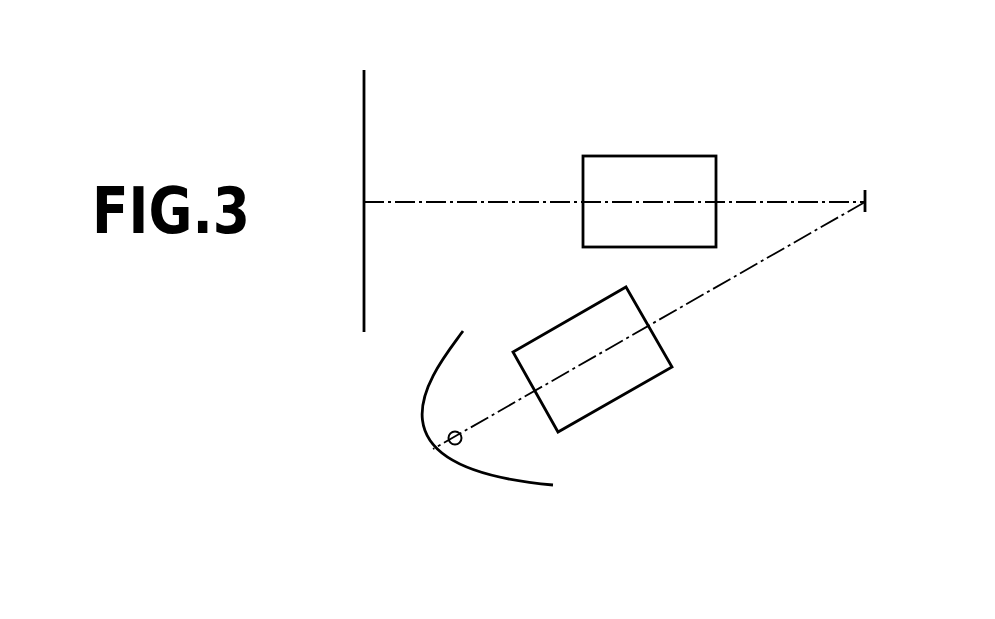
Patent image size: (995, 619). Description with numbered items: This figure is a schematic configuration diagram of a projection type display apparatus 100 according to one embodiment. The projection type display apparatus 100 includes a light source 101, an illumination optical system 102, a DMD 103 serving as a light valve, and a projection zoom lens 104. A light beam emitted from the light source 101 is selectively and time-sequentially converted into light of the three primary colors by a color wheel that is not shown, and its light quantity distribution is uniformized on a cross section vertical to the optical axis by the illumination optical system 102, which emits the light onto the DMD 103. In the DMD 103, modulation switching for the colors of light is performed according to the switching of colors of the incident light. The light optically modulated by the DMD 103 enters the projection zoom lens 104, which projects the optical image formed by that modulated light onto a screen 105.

The projection type display apparatus 100 is at (611, 62).
The light source 101 is at (467, 481).
The illumination optical system 102 is at (657, 377).
The DMD 103 is at (867, 204).
The projection zoom lens 104 is at (676, 156).
The screen 105 is at (364, 88).